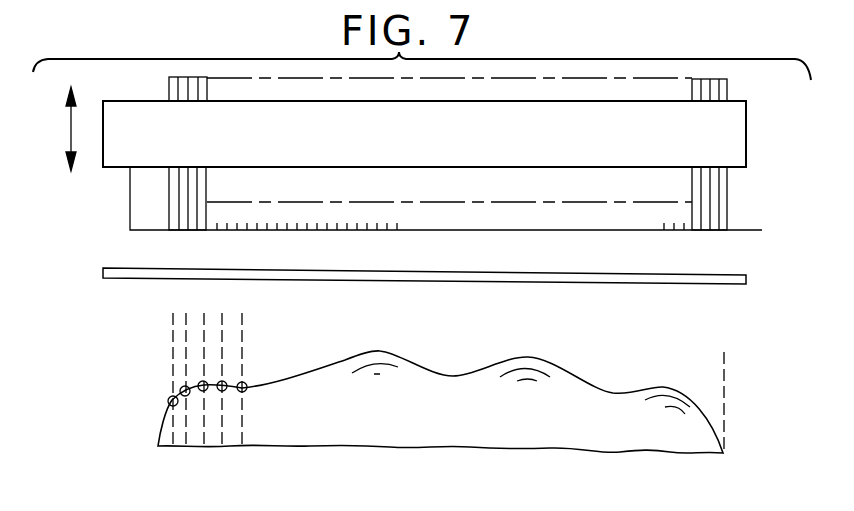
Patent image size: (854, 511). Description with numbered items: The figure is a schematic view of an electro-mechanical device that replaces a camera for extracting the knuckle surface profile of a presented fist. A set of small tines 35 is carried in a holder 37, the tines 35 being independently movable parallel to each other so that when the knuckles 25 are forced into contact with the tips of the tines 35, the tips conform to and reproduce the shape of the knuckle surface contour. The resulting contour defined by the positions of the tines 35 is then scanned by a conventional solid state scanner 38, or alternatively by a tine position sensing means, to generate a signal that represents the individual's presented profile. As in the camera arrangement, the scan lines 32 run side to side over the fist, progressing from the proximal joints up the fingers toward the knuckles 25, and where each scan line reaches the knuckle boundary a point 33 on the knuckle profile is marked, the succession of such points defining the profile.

The holder 37 is at (426, 146).
The tines 35 is at (206, 211).
The solid state scanner 38 is at (713, 276).
The knuckles 25 is at (510, 344).
The scan lines 32 is at (253, 360).
The point on the knuckle profile 33 is at (167, 400).